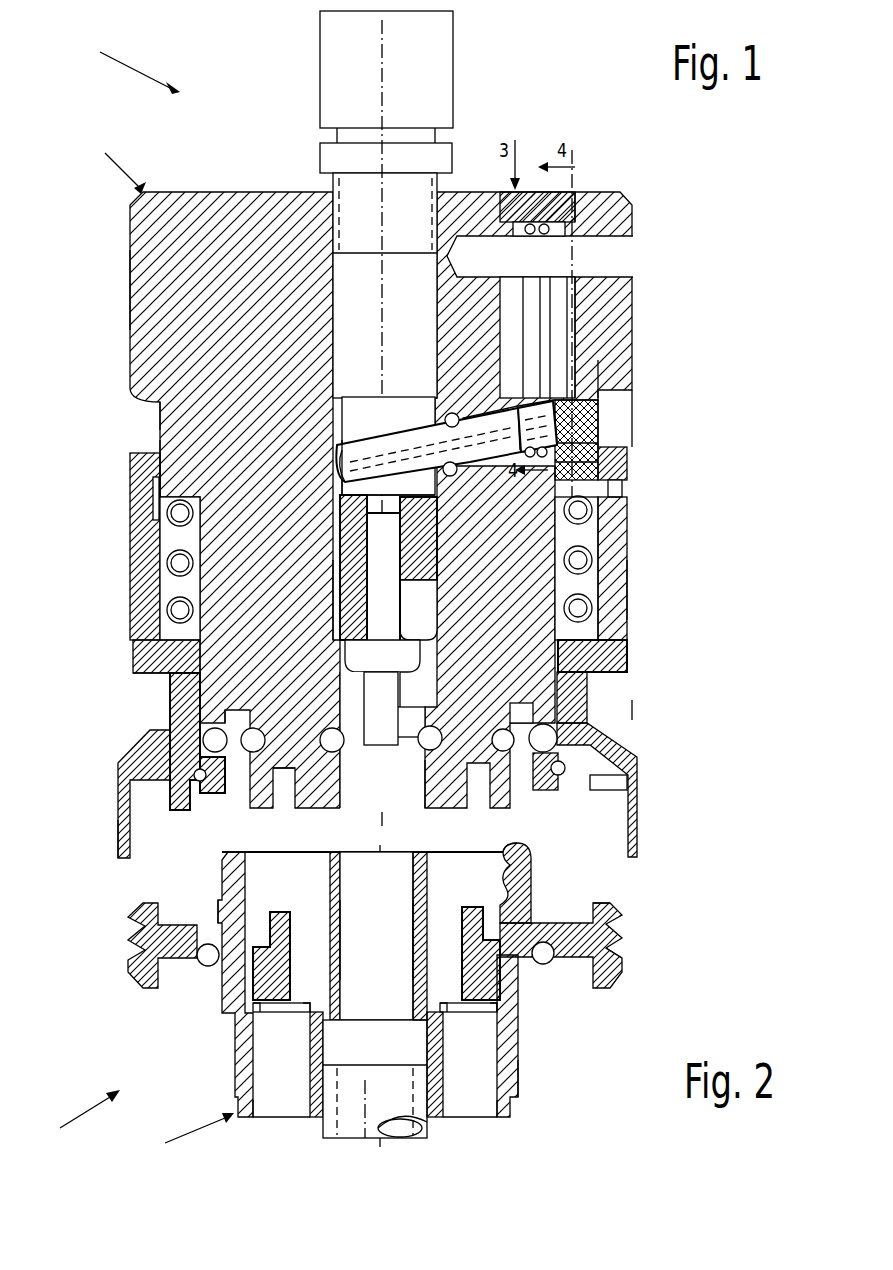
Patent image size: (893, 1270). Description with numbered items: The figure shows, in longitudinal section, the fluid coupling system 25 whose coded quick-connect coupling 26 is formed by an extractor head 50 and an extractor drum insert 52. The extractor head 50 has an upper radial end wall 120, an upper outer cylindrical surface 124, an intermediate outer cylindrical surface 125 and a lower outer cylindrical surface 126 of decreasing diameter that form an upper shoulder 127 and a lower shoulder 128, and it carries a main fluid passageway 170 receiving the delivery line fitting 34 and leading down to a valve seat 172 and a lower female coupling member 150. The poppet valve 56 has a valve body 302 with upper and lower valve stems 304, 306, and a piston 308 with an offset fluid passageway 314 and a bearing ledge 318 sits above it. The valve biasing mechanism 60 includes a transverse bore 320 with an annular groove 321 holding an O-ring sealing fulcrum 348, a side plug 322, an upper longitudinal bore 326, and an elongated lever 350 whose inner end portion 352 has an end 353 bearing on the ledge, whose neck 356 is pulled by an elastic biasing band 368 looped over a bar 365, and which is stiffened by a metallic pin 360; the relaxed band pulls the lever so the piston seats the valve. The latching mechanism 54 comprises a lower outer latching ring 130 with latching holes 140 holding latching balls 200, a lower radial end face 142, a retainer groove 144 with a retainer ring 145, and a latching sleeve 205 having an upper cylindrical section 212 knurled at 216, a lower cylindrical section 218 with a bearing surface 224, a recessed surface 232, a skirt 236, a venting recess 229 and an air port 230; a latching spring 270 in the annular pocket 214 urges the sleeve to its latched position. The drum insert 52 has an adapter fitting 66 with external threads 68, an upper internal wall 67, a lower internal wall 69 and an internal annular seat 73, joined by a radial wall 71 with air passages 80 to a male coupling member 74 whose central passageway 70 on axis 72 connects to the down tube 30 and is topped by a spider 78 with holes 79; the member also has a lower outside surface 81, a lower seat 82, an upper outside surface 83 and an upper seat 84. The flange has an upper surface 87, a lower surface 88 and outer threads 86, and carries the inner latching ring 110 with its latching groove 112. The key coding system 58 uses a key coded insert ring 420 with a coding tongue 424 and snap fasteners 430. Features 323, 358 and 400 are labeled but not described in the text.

In FIG. 1, the fluid coupling system 25 is at (128, 61).
In FIG. 1, the delivery line fitting 34 is at (455, 65).
In FIG. 1, the extractor head 50 is at (115, 157).
In FIG. 1, the upper radial end wall 120 is at (228, 192).
In FIG. 1, the upper outer cylindrical surface 124 is at (130, 300).
In FIG. 1, the intermediate outer cylindrical surface 125 is at (165, 410).
In FIG. 1, the lower shoulder 128 is at (175, 455).
In FIG. 1, the main fluid passageway 170 is at (371, 348).
In FIG. 1, the valve seat 172 is at (340, 640).
In FIG. 1, the bar 365 is at (635, 250).
In FIG. 1, the cylindrical neck 356 is at (583, 350).
In FIG. 1, the elastic biasing band 368 is at (544, 226).
In FIG. 1, the side plug 322 is at (600, 440).
In FIG. 1, the upper longitudinal bore 326 is at (585, 300).
In FIG. 1, the upper shoulder 127 is at (600, 398).
In FIG. 1, the pin bore 323 is at (577, 192).
In FIG. 1, the O-ring sealing fulcrum 348 is at (388, 446).
In FIG. 1, the inner end portion 352 is at (388, 486).
In FIG. 1, the packing block 358 is at (600, 402).
In FIG. 1, the valve biasing mechanism 60 is at (645, 417).
In FIG. 1, the air port 230 is at (628, 490).
In FIG. 1, the lever 350 is at (350, 440).
In FIG. 1, the lever end 353 is at (340, 468).
In FIG. 1, the bearing ledge 318 is at (335, 470).
In FIG. 1, the transverse bore 320 is at (450, 412).
In FIG. 1, the metallic pin 360 is at (445, 413).
In FIG. 1, the annular groove 321 is at (452, 478).
In FIG. 1, the piston 308 is at (340, 545).
In FIG. 1, the offset fluid passageway 314 is at (445, 558).
In FIG. 1, the upper valve stem 304 is at (366, 610).
In FIG. 1, the valve body 302 is at (382, 595).
In FIG. 1, the lower valve stem 306 is at (382, 741).
In FIG. 1, the annular venting recess 229 is at (140, 495).
In FIG. 1, the latching spring 270 is at (160, 560).
In FIG. 1, the lower outer cylindrical surface 126 is at (135, 640).
In FIG. 1, the lower cylindrical section 218 is at (172, 680).
In FIG. 1, the latching holes 140 is at (172, 705).
In FIG. 1, the retainer ring 145 is at (170, 745).
In FIG. 1, the outer latching ring 130 is at (140, 785).
In FIG. 1, the lower outer skirt 236 is at (120, 838).
In FIG. 1, the latching sleeve 205 is at (645, 552).
In FIG. 1, the upper cylindrical section 212 is at (627, 520).
In FIG. 1, the knurling 216 is at (627, 590).
In FIG. 1, the annular pocket 214 is at (607, 650).
In FIG. 1, the bearing surface 224 is at (585, 690).
In FIG. 1, the latching balls 200 is at (583, 730).
In FIG. 1, the retainer groove 144 is at (600, 752).
In FIG. 1, the lower radial end face 142 is at (625, 810).
In FIG. 1, the recessed surface 232 is at (590, 790).
In FIG. 1, the latching mechanism 54 is at (670, 718).
In FIG. 1, the poppet valve 56 is at (361, 770).
In FIG. 1, the female coupling member 150 is at (418, 782).
In FIG. 1, the ball groove 400 is at (317, 812).
In FIG. 1, the key coding system 58 is at (258, 820).
In FIG. 2, the male coupling member 74 is at (430, 847).
In FIG. 2, the upper internal cylindrical wall 67 is at (503, 853).
In FIG. 2, the latching groove 112 is at (222, 878).
In FIG. 2, the inner latching ring 110 is at (205, 904).
In FIG. 2, the key coded insert ring 420 is at (297, 905).
In FIG. 2, the upper seat 84 is at (326, 945).
In FIG. 2, the radial wall 71 is at (265, 1015).
In FIG. 2, the lower radial seat 82 is at (288, 1064).
In FIG. 2, the upper outside cylindrical surface 83 is at (430, 888).
In FIG. 2, the main central fluid passageway 70 is at (368, 992).
In FIG. 2, the holes 79 is at (355, 940).
In FIG. 2, the spider 78 is at (398, 940).
In FIG. 2, the down tube 30 is at (425, 1130).
In FIG. 2, the longitudinal central axis 72 is at (372, 1105).
In FIG. 2, the lower outside cylindrical surface 81 is at (460, 990).
In FIG. 2, the lower internal cylindrical wall 69 is at (500, 990).
In FIG. 2, the coding tongue 424 is at (462, 1064).
In FIG. 2, the external threads 68 is at (520, 1040).
In FIG. 2, the snap fasteners 430 is at (505, 1060).
In FIG. 2, the internal annular seat 73 is at (524, 893).
In FIG. 2, the lower surface 88 is at (182, 958).
In FIG. 2, the adapter fitting 66 is at (610, 905).
In FIG. 2, the flat upper surface 87 is at (565, 920).
In FIG. 2, the outer threads 86 is at (624, 948).
In FIG. 2, the coded quick-connect coupling 26 is at (76, 1119).
In FIG. 2, the extractor drum insert 52 is at (188, 1137).
In FIG. 2, the air passages 80 is at (280, 1110).